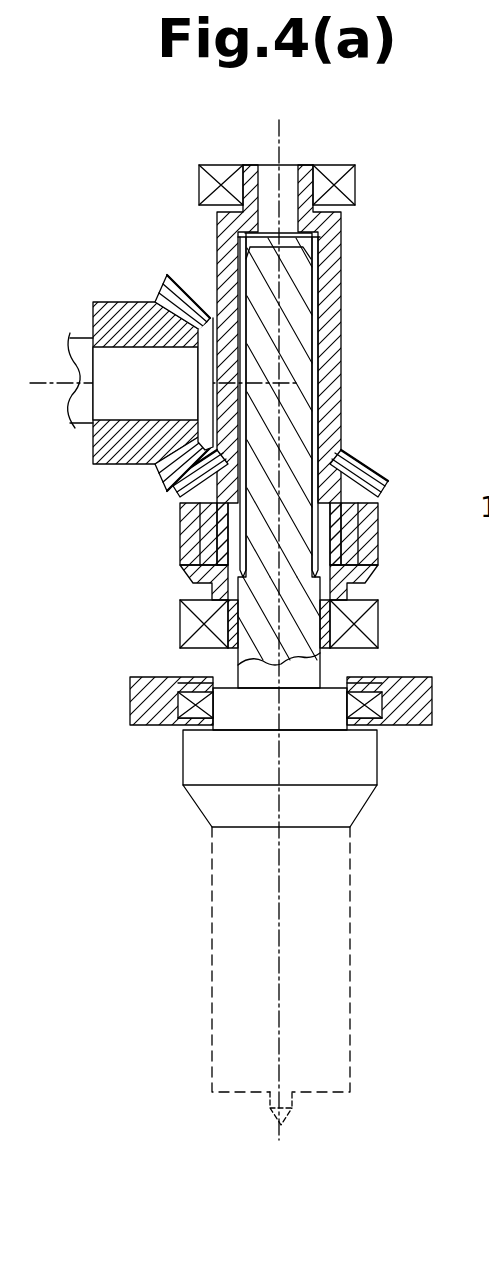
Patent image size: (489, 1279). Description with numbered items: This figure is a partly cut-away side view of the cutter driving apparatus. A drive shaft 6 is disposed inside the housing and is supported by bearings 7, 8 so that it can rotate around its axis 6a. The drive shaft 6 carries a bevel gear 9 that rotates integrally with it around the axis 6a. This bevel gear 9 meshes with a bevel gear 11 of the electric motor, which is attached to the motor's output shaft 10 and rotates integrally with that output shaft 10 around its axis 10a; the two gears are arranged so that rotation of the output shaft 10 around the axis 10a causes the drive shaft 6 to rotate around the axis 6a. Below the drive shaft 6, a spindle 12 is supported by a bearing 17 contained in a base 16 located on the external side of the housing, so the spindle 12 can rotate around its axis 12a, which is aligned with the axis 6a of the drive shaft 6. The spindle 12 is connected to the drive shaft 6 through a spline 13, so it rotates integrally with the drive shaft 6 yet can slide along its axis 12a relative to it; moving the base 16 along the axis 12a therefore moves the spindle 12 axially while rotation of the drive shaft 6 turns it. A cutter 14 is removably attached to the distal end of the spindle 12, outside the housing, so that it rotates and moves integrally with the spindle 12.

The drive shaft 6 is at (341, 232).
The axis of the drive shaft 6a is at (284, 146).
The bearing 7 is at (356, 180).
The bearing 8 is at (378, 622).
The bevel gear 9 is at (378, 462).
The output shaft 10 is at (74, 426).
The axis of the output shaft 10a is at (74, 338).
The bevel gear 11 is at (130, 302).
The spindle 12 is at (300, 345).
The axis of the spindle 12a is at (280, 752).
The spline 13 is at (318, 282).
The cutter 14 is at (350, 1047).
The base 16 is at (432, 700).
The bearing 17 is at (195, 680).